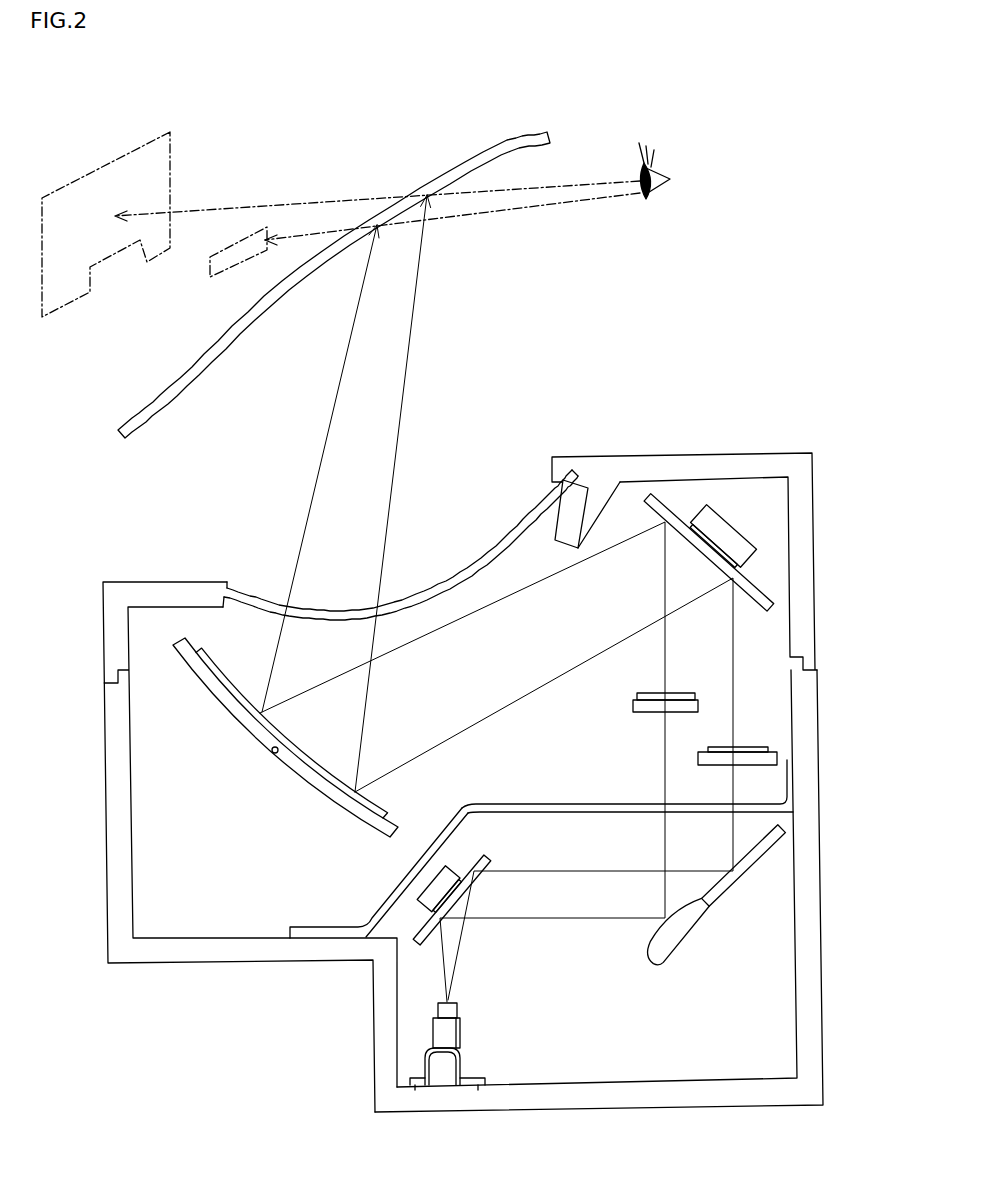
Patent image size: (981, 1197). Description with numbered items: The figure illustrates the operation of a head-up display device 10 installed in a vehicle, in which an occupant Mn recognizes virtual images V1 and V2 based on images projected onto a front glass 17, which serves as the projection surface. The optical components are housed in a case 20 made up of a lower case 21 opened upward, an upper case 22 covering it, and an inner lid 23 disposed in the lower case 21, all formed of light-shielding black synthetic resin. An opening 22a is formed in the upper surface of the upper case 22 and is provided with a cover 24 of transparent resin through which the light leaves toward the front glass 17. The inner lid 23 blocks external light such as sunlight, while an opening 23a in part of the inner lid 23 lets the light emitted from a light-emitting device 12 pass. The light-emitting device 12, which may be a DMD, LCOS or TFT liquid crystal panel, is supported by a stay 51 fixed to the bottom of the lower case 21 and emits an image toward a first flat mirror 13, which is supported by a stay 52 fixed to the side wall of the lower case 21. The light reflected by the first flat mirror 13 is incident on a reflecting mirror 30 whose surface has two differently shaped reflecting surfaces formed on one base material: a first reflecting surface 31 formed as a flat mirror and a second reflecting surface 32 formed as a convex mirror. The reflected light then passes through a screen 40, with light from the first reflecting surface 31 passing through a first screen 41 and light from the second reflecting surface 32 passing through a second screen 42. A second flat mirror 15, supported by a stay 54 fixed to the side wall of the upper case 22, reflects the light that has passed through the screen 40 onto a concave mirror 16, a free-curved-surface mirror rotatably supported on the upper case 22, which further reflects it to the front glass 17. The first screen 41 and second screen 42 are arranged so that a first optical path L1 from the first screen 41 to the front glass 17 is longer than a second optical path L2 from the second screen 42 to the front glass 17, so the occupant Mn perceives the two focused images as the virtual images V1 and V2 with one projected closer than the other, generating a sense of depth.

The head-up display device 10 is at (741, 345).
The light-emitting device 12 is at (462, 1032).
The first flat mirror 13 is at (423, 918).
The second flat mirror 15 is at (763, 585).
The concave mirror 16 is at (210, 680).
The front glass 17 is at (483, 151).
The case 20 is at (150, 967).
The lower case 21 is at (570, 1098).
The upper case 22 is at (720, 453).
The opening 22a is at (232, 587).
The inner lid 23 is at (330, 925).
The opening 23a is at (660, 810).
The cover 24 is at (553, 512).
The reflecting mirror 30 is at (712, 925).
The first reflecting surface 31 is at (743, 877).
The second reflecting surface 32 is at (684, 936).
The screen 40 is at (653, 737).
The first screen 41 is at (722, 747).
The second screen 42 is at (640, 693).
The stay 51 is at (462, 1064).
The stay 52 is at (437, 878).
The stay 54 is at (667, 498).
The virtual image V1 is at (172, 155).
The virtual image V2 is at (208, 272).
The first optical path L1 is at (730, 633).
The second optical path L2 is at (663, 568).
The occupant Mn is at (663, 172).